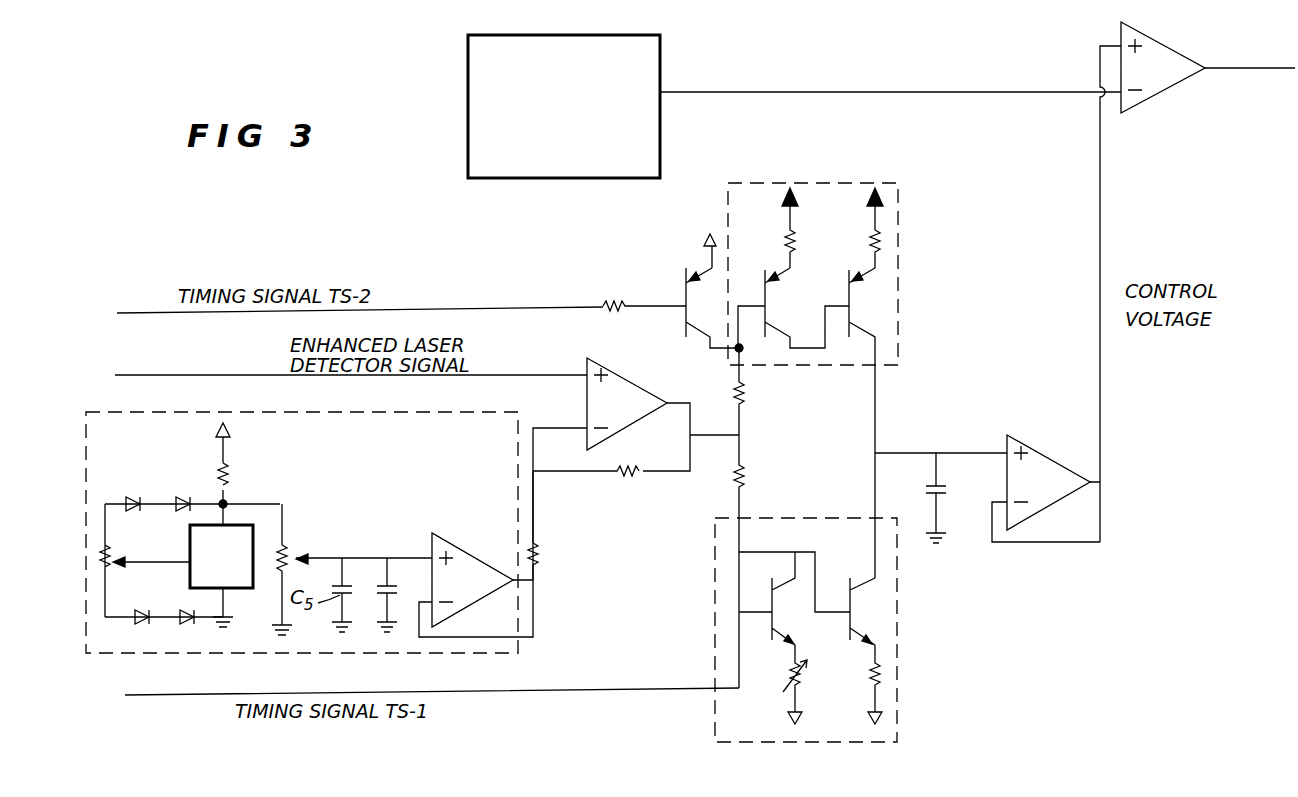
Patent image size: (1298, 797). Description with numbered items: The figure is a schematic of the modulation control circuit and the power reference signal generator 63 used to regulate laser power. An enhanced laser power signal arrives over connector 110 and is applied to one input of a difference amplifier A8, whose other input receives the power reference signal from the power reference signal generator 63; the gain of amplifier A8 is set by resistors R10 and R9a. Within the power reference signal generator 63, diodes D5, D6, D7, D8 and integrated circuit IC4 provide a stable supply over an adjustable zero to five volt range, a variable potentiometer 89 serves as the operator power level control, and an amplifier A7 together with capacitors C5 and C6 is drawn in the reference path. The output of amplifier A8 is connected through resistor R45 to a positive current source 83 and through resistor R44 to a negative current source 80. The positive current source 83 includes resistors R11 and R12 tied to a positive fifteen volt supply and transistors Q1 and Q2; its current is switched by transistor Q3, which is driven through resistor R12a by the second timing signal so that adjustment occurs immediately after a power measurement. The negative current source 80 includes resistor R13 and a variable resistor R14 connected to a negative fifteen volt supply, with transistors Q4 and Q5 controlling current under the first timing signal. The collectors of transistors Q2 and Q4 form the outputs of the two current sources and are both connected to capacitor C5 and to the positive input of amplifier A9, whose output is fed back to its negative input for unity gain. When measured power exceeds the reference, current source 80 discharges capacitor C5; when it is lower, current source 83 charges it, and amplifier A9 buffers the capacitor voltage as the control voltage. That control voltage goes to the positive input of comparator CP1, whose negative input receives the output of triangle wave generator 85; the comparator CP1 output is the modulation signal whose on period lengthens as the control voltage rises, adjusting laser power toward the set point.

The triangle wave generator 85 is at (662, 73).
The positive current source 83 is at (820, 170).
The power reference signal generator 63 is at (113, 432).
The connector 110 is at (185, 377).
The variable potentiometer 89 is at (303, 544).
The negative current source 80 is at (898, 698).
The comparator CP1 is at (1197, 282).
The amplifier A7 is at (414, 580).
The difference amplifier A8 is at (402, 497).
The amplifier A9 is at (987, 488).
The integrated circuit IC4 is at (183, 565).
The transistor Q1 is at (793, 308).
The transistor Q2 is at (865, 423).
The transistor Q3 is at (712, 291).
The transistor Q4 is at (866, 611).
The transistor Q5 is at (788, 598).
The resistor R9a is at (540, 552).
The resistor R10 is at (620, 475).
The resistor R11 is at (787, 240).
The resistor R12 is at (872, 240).
The resistor R12a is at (603, 303).
The resistor R13 is at (868, 685).
The variable resistor R14 is at (790, 680).
The resistor R44 is at (745, 476).
The resistor R45 is at (745, 393).
The capacitor C5 is at (942, 488).
The capacitor C6 is at (386, 591).
The diode D5 is at (135, 496).
The diode D6 is at (185, 496).
The diode D7 is at (142, 624).
The diode D8 is at (187, 624).